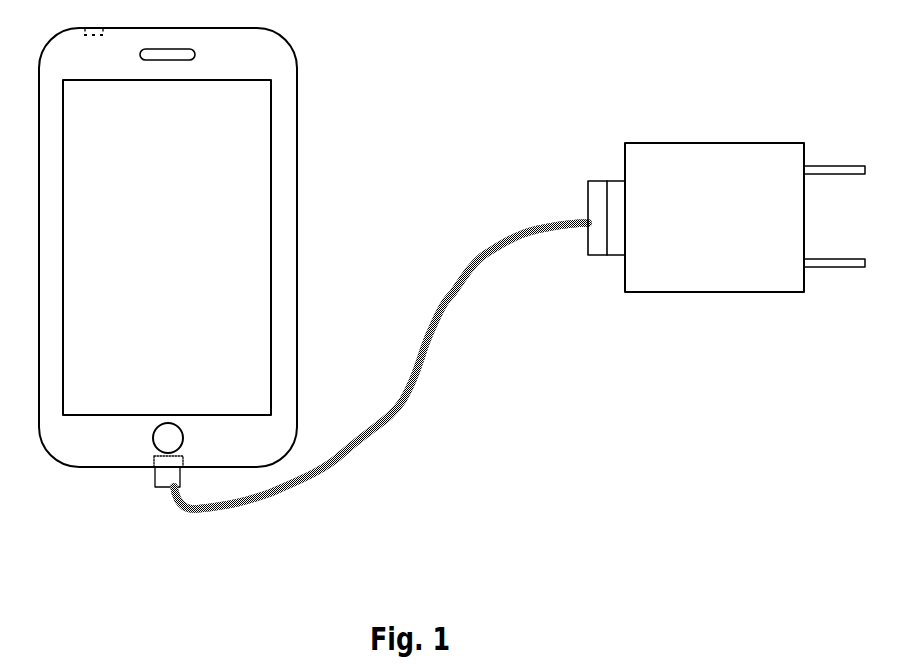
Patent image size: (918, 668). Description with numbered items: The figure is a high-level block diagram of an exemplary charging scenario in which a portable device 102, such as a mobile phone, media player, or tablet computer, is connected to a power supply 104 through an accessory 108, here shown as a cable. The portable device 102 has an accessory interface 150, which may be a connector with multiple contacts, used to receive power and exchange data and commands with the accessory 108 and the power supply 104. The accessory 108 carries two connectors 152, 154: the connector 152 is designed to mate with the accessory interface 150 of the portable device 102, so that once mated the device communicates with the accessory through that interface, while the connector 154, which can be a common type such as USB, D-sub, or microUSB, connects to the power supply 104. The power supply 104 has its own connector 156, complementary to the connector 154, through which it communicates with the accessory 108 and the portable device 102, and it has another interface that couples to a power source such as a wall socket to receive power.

The portable device 102 is at (297, 80).
The power supply 104 is at (688, 143).
The accessory 108 is at (355, 447).
The accessory interface 150 is at (183, 457).
The connector 152 is at (153, 472).
The connector 154 is at (598, 180).
The connector 156 is at (617, 257).